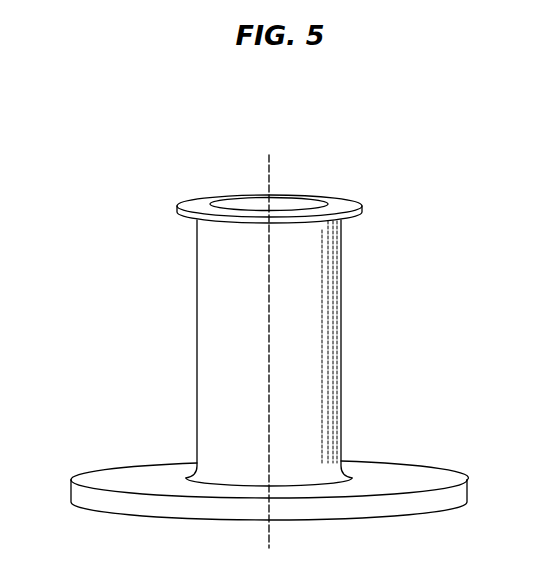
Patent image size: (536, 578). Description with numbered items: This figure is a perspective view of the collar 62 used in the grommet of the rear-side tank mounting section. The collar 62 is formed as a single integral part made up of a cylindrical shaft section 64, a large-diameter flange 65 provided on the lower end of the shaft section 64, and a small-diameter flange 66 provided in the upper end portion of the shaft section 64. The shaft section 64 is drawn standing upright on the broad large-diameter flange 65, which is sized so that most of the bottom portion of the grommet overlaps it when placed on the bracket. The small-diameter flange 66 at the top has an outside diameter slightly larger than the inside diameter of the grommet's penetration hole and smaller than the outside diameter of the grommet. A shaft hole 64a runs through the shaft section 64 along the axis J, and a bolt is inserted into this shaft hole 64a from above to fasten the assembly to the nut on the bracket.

The collar 62 is at (256, 326).
The cylindrical shaft section 64 is at (208, 330).
The shaft hole 64a is at (290, 201).
The large-diameter flange 65 is at (113, 478).
The small-diameter flange 66 is at (197, 196).
The axis J is at (268, 337).